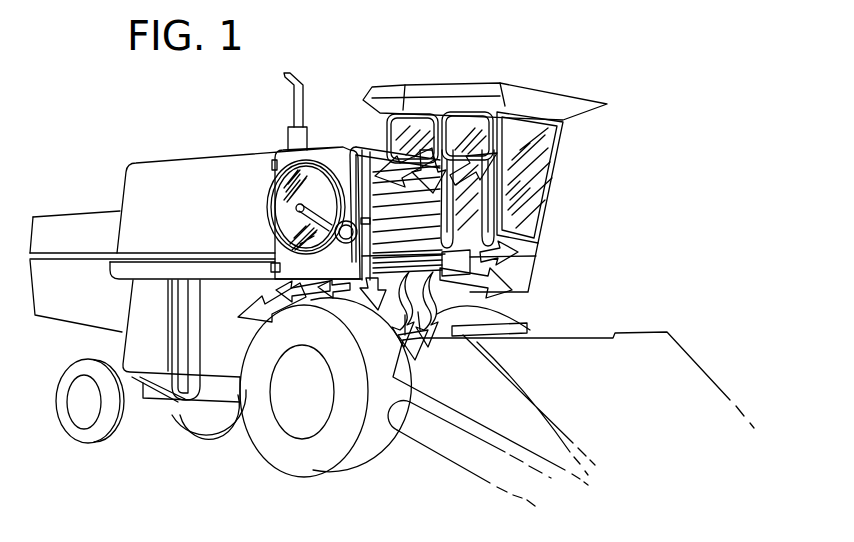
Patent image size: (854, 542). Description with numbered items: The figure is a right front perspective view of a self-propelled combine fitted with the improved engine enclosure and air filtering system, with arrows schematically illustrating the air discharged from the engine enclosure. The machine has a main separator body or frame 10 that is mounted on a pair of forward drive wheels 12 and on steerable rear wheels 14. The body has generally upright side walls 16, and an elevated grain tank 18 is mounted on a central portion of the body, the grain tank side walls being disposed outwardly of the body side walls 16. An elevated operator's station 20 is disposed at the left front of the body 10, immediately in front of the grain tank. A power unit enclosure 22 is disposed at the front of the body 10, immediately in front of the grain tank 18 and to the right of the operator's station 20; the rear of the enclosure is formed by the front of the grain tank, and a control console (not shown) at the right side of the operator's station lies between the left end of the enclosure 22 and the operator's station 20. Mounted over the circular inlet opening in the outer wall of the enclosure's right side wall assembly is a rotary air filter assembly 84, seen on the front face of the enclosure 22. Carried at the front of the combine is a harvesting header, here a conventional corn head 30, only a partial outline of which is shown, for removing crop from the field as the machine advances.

The main separator body 10 is at (100, 135).
The forward drive wheels 12 is at (362, 457).
The steerable rear wheels 14 is at (118, 413).
The side walls 16 is at (138, 348).
The grain tank 18 is at (193, 149).
The operator's station 20 is at (585, 157).
The power unit enclosure 22 is at (337, 123).
The corn head 30 is at (740, 389).
The rotary air filter assembly 84 is at (263, 201).